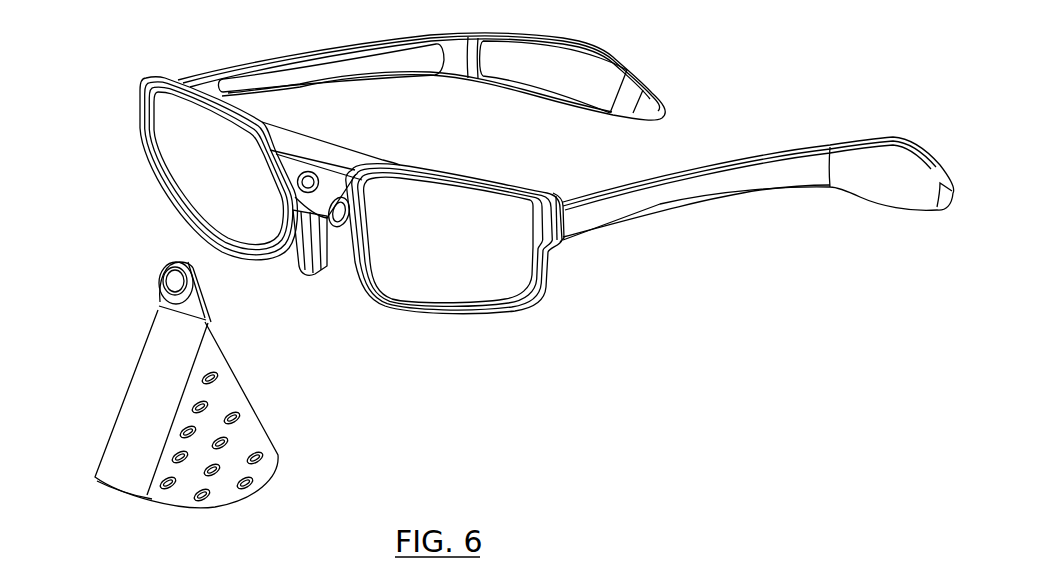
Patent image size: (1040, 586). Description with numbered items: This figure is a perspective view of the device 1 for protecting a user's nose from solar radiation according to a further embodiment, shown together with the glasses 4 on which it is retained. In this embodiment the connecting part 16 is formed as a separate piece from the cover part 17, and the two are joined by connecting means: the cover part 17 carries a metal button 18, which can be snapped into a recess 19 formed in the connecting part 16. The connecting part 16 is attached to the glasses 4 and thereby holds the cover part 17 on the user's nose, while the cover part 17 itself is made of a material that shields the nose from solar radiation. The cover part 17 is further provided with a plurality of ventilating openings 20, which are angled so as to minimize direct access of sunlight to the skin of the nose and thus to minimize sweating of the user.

The device for protecting a user's nose from solar radiation 1 is at (420, 404).
The glasses 4 is at (135, 92).
The connecting part 16 is at (333, 148).
The cover part 17 is at (143, 442).
The metal button 18 is at (175, 292).
The recess 19 is at (297, 184).
The ventilating openings 20 is at (213, 376).